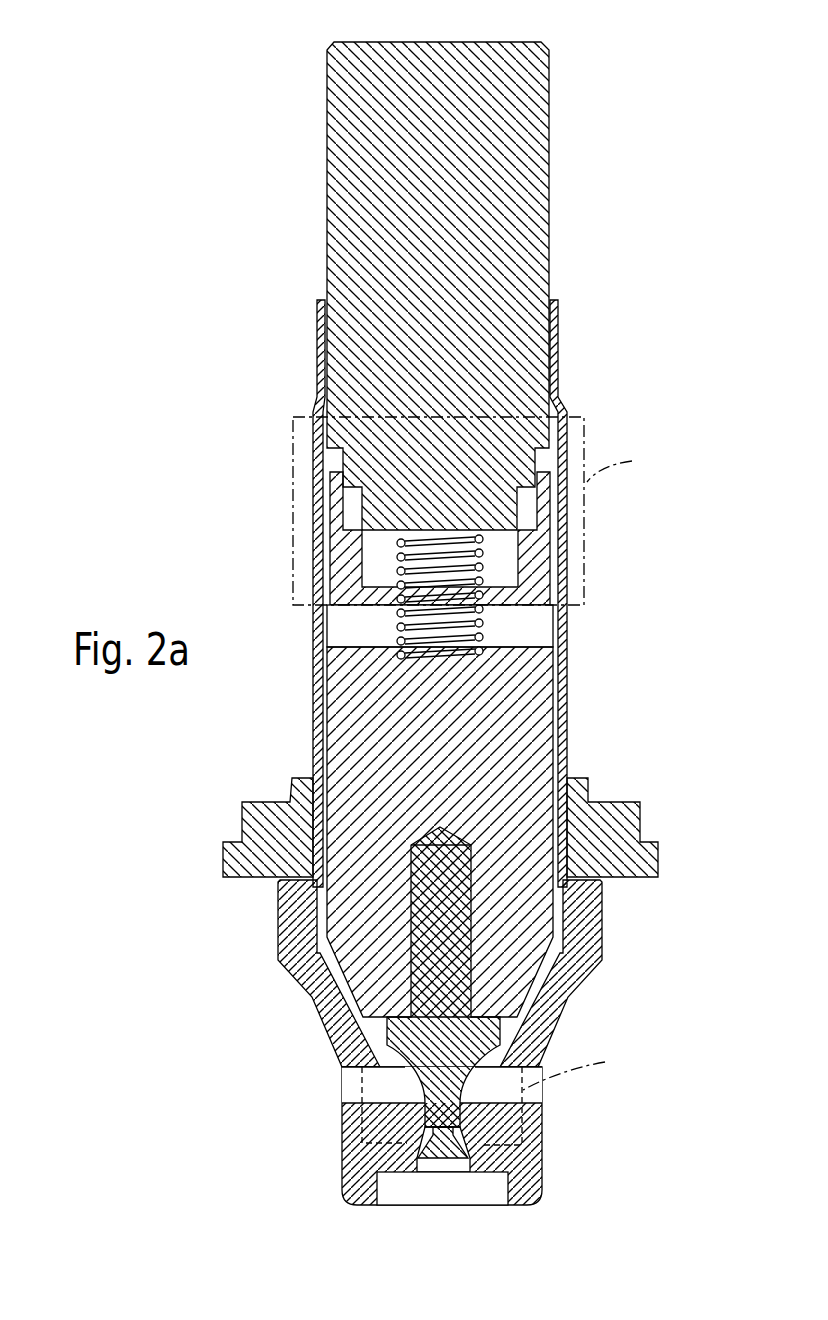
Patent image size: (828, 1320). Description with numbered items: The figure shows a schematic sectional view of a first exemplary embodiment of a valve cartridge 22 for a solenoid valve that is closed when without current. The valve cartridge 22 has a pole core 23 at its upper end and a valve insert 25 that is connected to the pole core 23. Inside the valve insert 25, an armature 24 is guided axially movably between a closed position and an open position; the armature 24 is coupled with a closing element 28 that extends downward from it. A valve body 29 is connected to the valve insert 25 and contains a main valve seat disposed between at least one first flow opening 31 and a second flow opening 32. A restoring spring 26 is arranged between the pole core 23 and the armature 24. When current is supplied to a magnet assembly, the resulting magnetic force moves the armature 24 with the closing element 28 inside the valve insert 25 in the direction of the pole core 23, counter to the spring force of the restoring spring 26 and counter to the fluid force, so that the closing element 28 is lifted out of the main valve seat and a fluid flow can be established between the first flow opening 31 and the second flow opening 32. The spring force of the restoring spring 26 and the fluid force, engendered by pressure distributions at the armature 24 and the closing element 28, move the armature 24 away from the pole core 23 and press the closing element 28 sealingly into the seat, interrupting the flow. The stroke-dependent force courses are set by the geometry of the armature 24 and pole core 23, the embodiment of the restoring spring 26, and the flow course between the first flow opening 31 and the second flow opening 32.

The valve cartridge 22 is at (245, 80).
The pole core 23 is at (527, 145).
The armature 24 is at (538, 718).
The valve insert 25 is at (566, 760).
The restoring spring 26 is at (487, 622).
The closing element 28 is at (460, 955).
The valve body 29 is at (525, 1122).
The first flow opening 31 is at (350, 1090).
The second flow opening 32 is at (448, 1185).